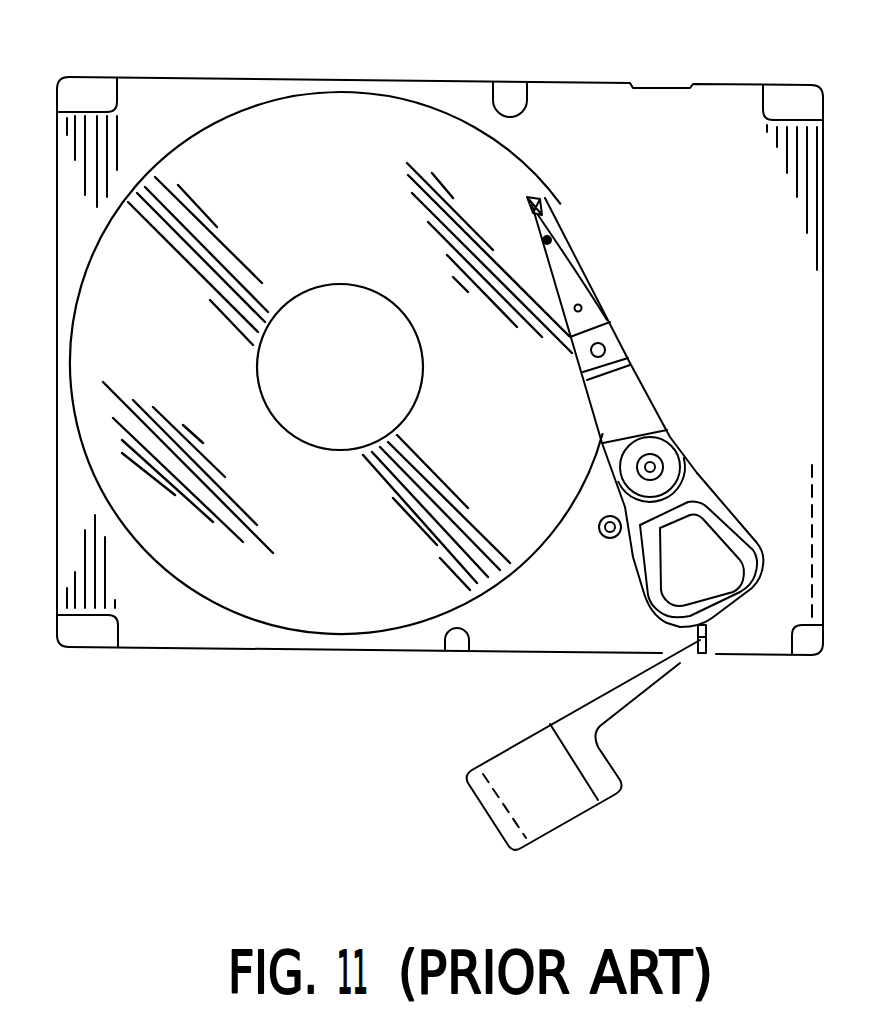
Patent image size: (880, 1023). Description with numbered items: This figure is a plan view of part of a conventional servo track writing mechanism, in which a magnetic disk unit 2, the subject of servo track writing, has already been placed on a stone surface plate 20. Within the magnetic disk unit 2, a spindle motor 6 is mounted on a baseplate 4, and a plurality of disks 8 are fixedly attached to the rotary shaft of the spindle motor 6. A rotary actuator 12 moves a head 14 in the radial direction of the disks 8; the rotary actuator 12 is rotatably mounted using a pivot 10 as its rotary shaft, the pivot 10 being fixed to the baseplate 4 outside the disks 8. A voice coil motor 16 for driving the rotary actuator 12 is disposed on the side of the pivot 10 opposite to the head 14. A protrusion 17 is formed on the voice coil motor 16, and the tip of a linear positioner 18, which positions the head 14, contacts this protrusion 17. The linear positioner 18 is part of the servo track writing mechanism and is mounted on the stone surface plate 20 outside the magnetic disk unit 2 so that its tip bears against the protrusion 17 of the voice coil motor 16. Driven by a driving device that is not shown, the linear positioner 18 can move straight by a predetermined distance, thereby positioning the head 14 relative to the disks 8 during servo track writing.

The magnetic disk unit 2 is at (440, 437).
The baseplate 4 is at (219, 650).
The spindle motor 6 is at (353, 307).
The disks 8 is at (360, 123).
The pivot 10 is at (677, 434).
The rotary actuator 12 is at (625, 327).
The head 14 is at (532, 204).
The voice coil motor 16 is at (667, 563).
The protrusion 17 is at (713, 655).
The linear positioner 18 is at (589, 808).
The stone surface plate 20 is at (353, 761).